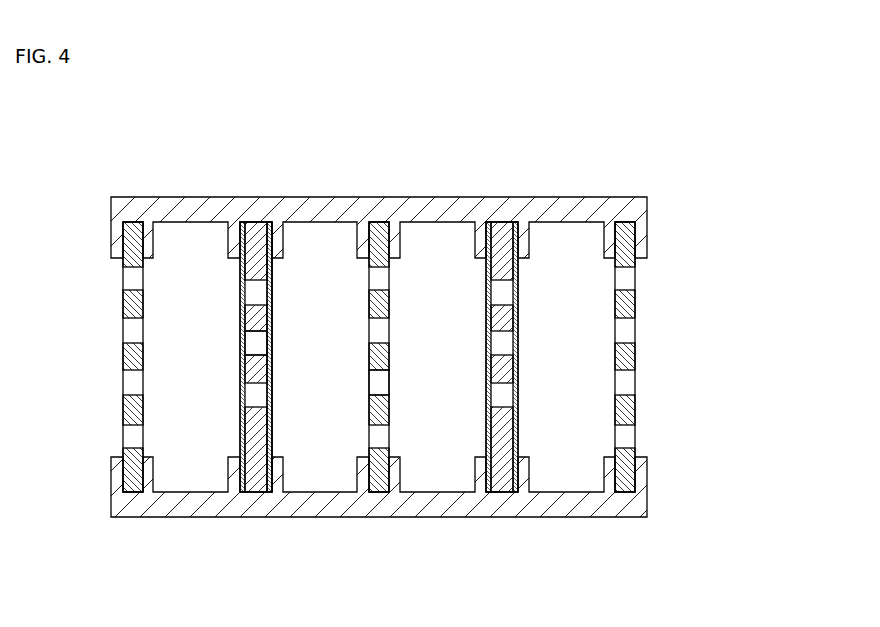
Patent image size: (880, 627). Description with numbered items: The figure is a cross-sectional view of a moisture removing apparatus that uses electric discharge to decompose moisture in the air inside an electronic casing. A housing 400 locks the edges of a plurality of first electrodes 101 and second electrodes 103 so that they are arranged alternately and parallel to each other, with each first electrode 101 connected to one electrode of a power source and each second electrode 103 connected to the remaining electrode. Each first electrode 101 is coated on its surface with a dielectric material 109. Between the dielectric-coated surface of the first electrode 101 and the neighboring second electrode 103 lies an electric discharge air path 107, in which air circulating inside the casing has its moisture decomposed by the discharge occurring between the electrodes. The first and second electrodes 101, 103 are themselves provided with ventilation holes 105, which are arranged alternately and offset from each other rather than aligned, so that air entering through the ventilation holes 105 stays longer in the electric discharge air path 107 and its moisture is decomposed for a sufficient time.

The housing 400 is at (640, 217).
The second electrode 103 is at (133, 226).
The first electrode 101 is at (255, 487).
The ventilation holes 105 is at (379, 391).
The electric discharge air path 107 is at (313, 273).
The dielectric material 109 is at (272, 427).